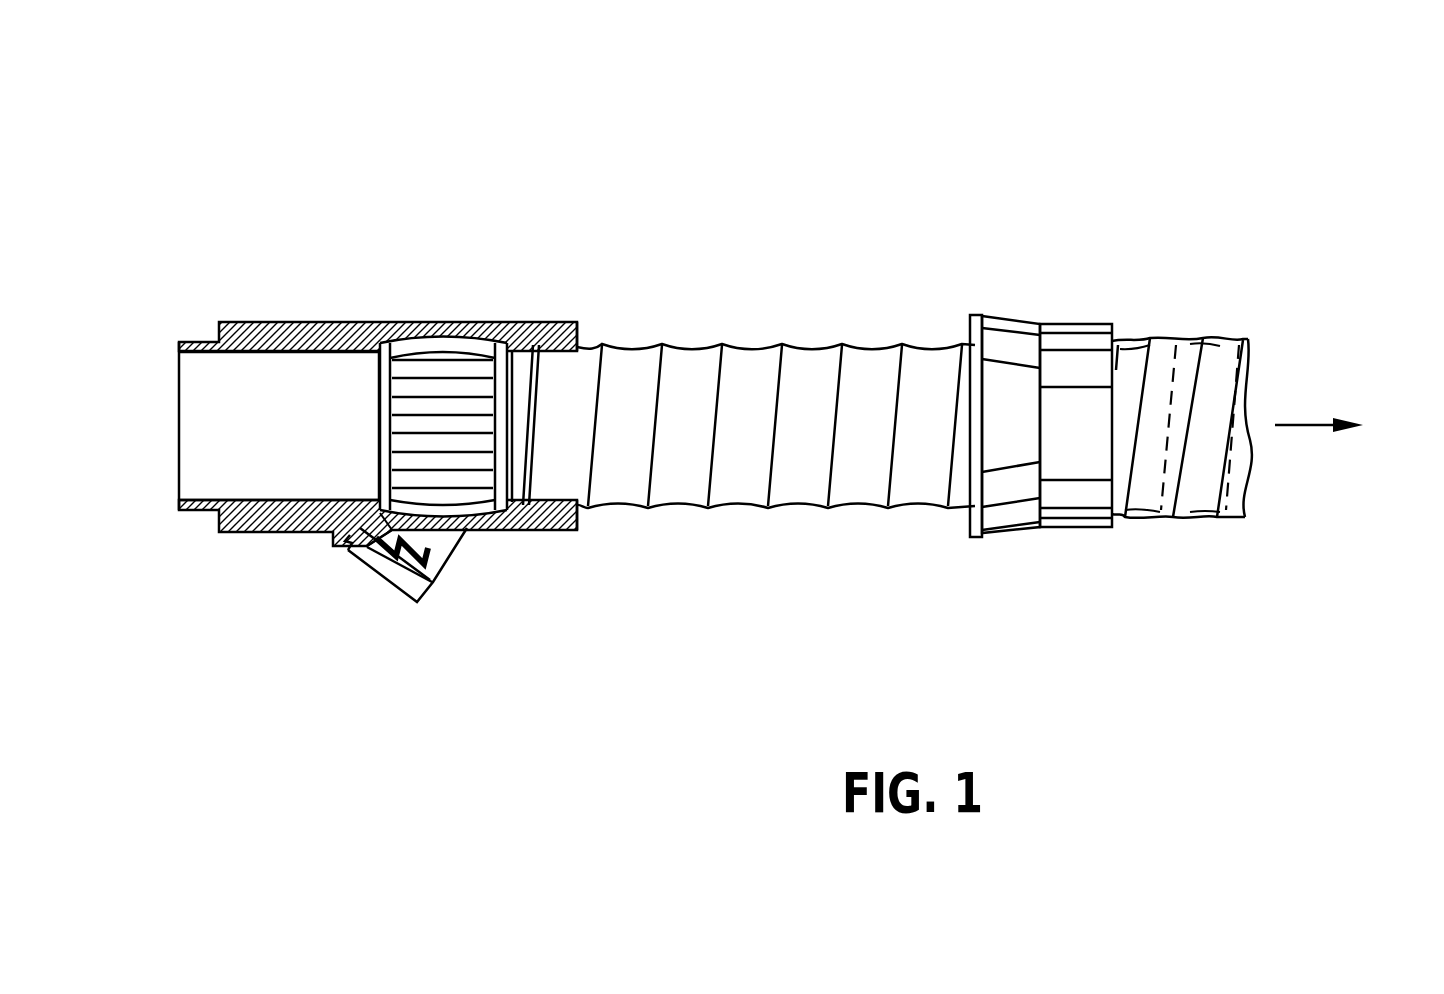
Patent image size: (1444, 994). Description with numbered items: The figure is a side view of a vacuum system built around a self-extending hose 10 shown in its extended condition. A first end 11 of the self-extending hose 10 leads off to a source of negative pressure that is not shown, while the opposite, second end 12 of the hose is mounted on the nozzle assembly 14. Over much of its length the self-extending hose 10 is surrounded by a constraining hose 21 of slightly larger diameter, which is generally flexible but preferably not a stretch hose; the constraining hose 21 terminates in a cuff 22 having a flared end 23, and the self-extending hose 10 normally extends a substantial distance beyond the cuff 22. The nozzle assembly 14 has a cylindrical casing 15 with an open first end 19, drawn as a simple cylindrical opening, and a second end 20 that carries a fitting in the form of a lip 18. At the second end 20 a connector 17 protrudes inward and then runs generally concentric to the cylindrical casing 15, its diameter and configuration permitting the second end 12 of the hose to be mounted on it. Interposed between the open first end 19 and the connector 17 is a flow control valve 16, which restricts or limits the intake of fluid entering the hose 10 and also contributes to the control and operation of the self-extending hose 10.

The self-extending hose 10 is at (880, 282).
The first end 11 is at (1356, 406).
The second end 12 is at (550, 430).
The nozzle assembly 14 is at (373, 233).
The cylindrical casing 15 is at (453, 318).
The flow control valve 16 is at (397, 320).
The connector 17 is at (532, 320).
The lip 18 is at (577, 322).
The first end 19 is at (180, 490).
The second end 20 is at (577, 520).
The constraining hose 21 is at (1172, 333).
The cuff 22 is at (1070, 325).
The flared end 23 is at (984, 316).